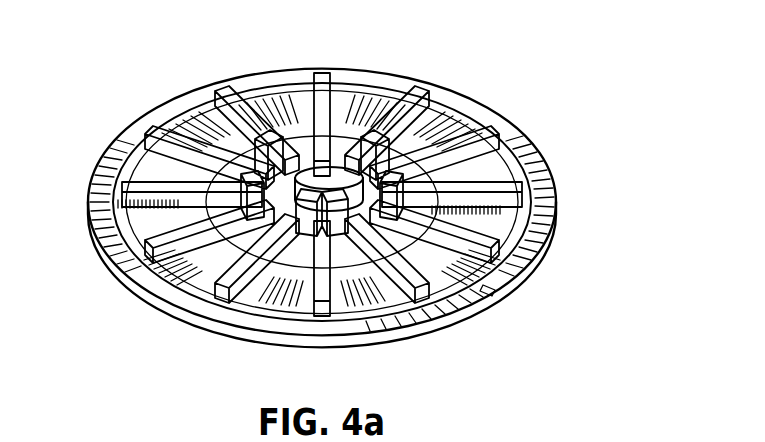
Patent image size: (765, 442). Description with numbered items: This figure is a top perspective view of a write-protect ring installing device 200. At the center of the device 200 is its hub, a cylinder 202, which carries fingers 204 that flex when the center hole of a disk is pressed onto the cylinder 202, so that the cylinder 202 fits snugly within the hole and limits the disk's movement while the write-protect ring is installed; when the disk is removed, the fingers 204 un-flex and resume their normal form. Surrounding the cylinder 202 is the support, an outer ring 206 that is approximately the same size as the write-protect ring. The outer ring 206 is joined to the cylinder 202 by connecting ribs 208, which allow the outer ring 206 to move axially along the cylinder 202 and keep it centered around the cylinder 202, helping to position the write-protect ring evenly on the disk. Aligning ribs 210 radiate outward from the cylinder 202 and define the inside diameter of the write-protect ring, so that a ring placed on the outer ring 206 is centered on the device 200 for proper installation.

The write-protect ring installing device 200 is at (457, 67).
The cylinder 202 is at (389, 136).
The fingers 204 is at (400, 180).
The outer ring 206 is at (497, 291).
The connecting ribs 208 is at (295, 322).
The aligning ribs 210 is at (225, 95).